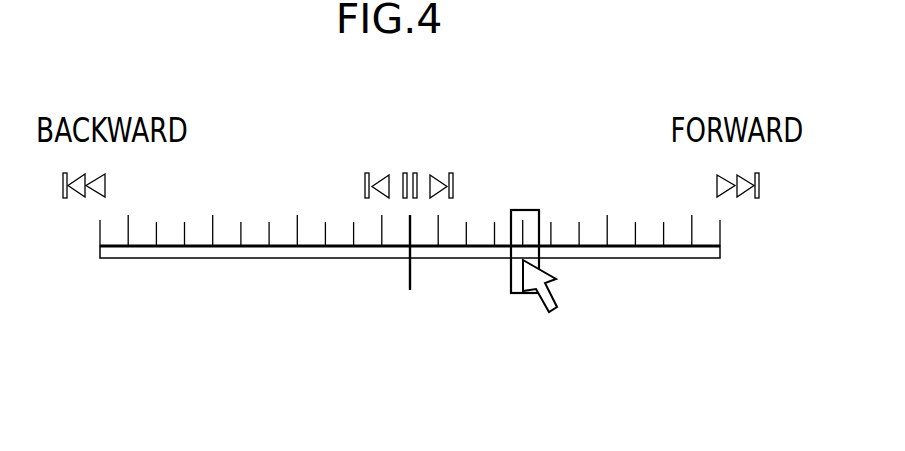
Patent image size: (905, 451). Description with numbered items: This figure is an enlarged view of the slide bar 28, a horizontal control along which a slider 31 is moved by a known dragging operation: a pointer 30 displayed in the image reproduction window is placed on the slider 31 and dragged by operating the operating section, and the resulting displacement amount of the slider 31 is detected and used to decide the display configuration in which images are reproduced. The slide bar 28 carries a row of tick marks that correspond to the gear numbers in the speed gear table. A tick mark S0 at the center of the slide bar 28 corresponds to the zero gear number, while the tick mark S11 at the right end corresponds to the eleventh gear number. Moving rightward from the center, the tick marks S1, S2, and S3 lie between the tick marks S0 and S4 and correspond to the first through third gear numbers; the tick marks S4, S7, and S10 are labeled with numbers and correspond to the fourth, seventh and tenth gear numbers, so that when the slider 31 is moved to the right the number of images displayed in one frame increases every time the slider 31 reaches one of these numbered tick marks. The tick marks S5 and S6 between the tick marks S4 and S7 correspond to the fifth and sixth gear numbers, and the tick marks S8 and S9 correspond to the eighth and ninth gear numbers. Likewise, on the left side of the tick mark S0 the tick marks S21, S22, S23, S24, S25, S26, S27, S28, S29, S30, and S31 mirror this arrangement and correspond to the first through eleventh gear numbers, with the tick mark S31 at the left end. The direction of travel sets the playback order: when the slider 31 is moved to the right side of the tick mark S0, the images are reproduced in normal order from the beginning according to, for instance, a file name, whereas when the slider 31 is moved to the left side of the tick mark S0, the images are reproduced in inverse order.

The slide bar 28 is at (336, 181).
The pointer 30 is at (548, 313).
The slider 31 is at (532, 226).
The tick mark S0 is at (410, 290).
The tick mark S1 is at (438, 238).
The tick mark S2 is at (466, 238).
The tick mark S3 is at (494, 238).
The tick mark S4 is at (523, 238).
The tick mark S5 is at (551, 238).
The tick mark S6 is at (579, 238).
The tick mark S7 is at (607, 238).
The tick mark S8 is at (635, 238).
The tick mark S9 is at (664, 238).
The tick mark S10 is at (692, 238).
The tick mark S11 is at (720, 246).
The tick mark S21 is at (382, 238).
The tick mark S22 is at (354, 238).
The tick mark S23 is at (325, 238).
The tick mark S24 is at (297, 238).
The tick mark S25 is at (269, 238).
The tick mark S26 is at (241, 238).
The tick mark S27 is at (213, 238).
The tick mark S28 is at (184, 238).
The tick mark S29 is at (156, 238).
The tick mark S30 is at (128, 238).
The tick mark S31 is at (100, 246).